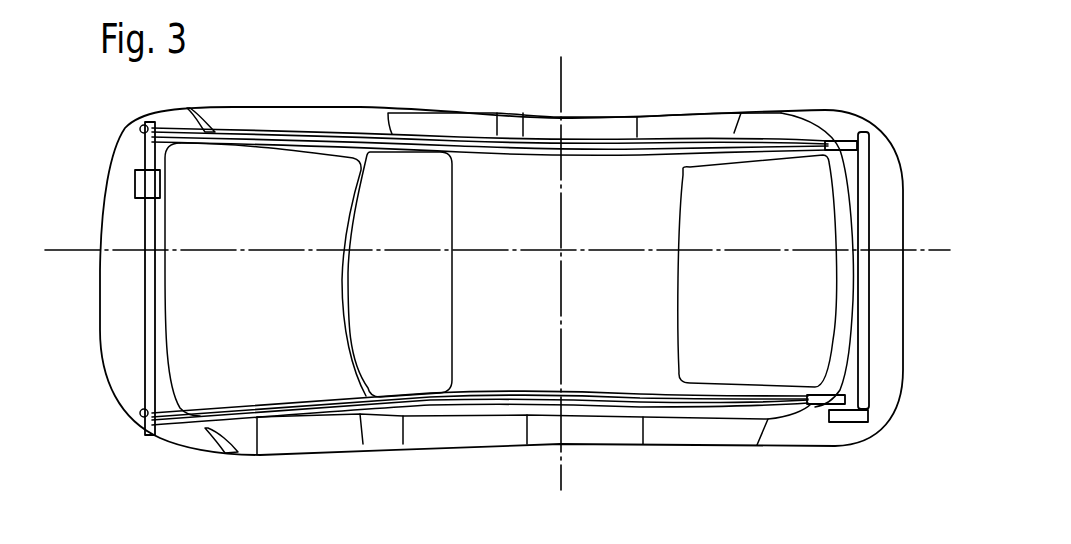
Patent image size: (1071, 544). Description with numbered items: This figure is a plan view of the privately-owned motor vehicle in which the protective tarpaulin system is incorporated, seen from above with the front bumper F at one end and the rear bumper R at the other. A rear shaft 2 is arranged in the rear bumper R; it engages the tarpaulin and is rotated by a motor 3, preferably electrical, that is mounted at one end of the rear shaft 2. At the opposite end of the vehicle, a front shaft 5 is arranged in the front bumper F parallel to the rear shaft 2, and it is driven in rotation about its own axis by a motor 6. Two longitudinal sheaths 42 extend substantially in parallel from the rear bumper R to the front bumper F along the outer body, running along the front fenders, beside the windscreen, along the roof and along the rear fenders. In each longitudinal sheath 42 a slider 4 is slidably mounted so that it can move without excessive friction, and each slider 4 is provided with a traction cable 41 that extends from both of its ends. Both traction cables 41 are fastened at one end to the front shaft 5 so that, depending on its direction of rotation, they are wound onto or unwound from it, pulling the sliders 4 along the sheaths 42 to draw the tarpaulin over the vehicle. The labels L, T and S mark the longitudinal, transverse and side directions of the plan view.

The rear shaft 2 is at (868, 195).
The motor 3 is at (850, 421).
The slider 4 is at (836, 147).
The front shaft 5 is at (150, 301).
The motor 6 is at (135, 182).
The traction cable 41 is at (597, 153).
The longitudinal sheath 42 is at (495, 143).
The longitudinal axis L is at (496, 236).
The transverse axis T is at (569, 271).
The side of vehicle S is at (420, 107).
The front bumper F is at (125, 354).
The rear bumper R is at (882, 337).